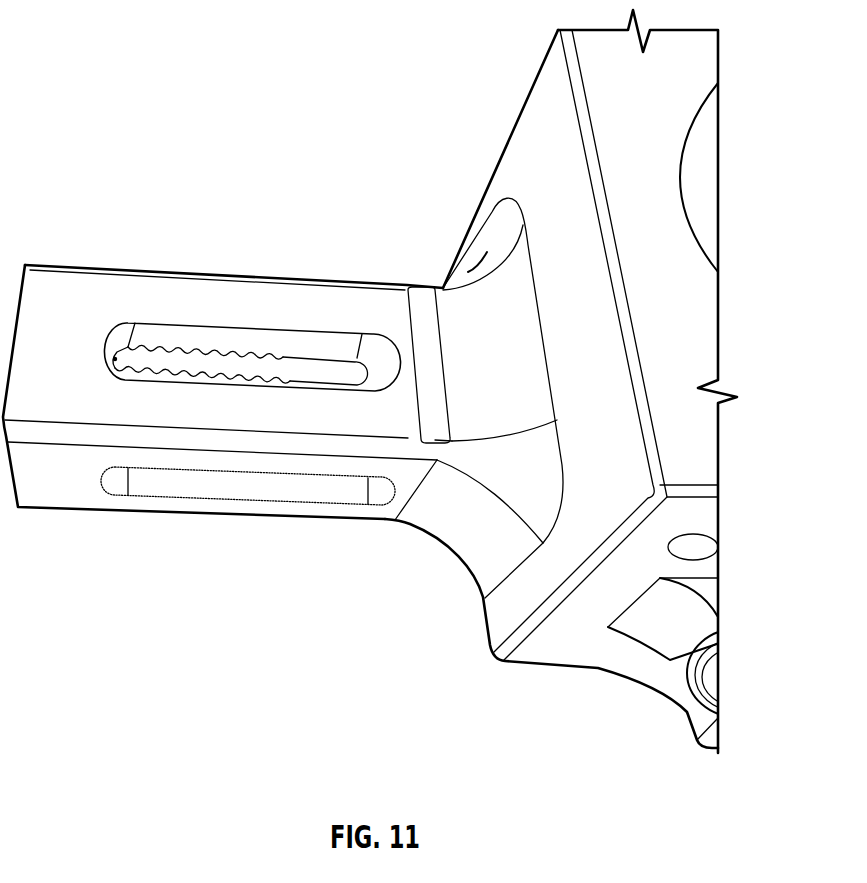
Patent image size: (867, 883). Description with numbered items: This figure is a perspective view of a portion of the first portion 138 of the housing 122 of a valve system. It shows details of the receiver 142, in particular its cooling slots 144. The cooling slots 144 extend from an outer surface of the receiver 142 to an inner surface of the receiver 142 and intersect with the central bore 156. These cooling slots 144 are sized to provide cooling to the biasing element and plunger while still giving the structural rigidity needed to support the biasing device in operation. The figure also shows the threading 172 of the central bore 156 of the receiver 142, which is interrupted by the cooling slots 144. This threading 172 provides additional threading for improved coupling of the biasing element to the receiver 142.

The housing 122 is at (127, 59).
The first portion 138 is at (467, 101).
The receiver 142 is at (52, 497).
The cooling slots 144 is at (323, 330).
The central bore 156 is at (150, 345).
The threading 172 is at (215, 358).